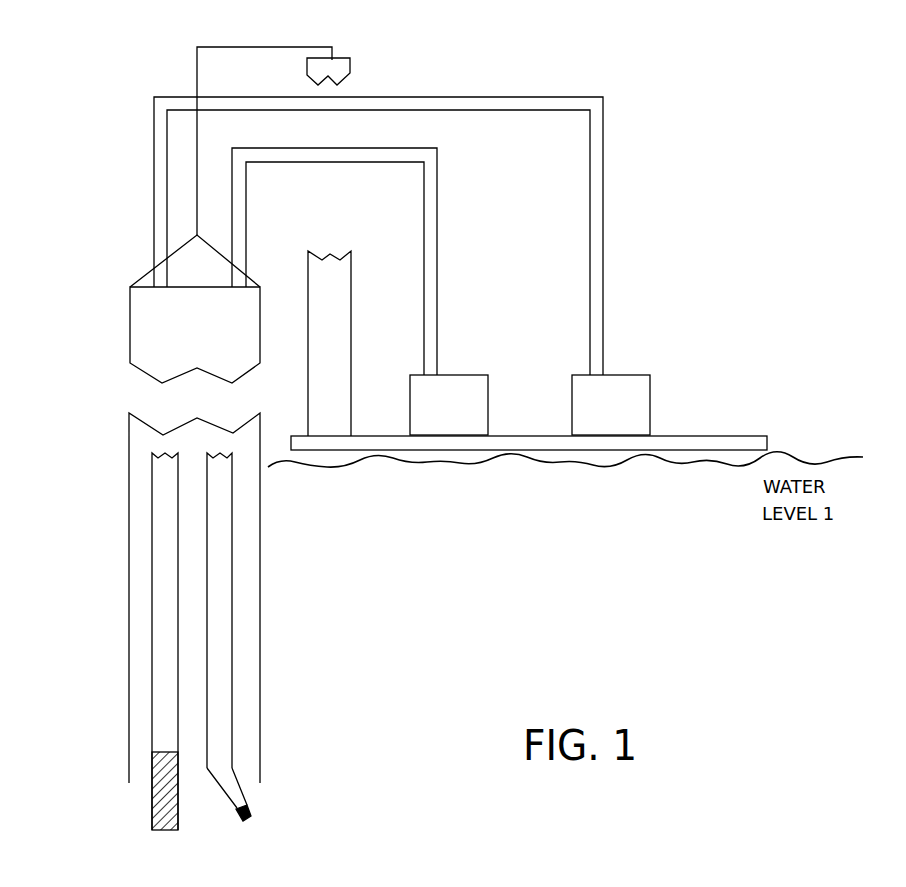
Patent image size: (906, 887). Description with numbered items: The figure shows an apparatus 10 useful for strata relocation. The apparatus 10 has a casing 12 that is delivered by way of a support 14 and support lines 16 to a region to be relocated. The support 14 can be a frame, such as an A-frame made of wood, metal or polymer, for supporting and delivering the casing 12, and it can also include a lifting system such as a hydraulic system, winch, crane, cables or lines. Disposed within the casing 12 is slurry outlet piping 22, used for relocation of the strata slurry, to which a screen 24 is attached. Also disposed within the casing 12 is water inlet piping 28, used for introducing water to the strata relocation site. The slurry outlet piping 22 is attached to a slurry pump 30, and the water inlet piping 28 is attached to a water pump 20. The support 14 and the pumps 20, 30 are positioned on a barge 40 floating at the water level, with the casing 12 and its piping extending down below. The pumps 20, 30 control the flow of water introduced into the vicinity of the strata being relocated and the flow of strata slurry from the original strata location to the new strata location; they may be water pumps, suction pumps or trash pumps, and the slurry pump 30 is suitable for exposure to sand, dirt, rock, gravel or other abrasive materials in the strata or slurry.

The apparatus 10 is at (72, 374).
The casing 12 is at (129, 576).
The support 14 is at (350, 60).
The support lines 16 is at (197, 62).
The water pump 20 is at (449, 405).
The slurry outlet piping 22 is at (603, 250).
The screen 24 is at (152, 810).
The water inlet piping 28 is at (437, 255).
The slurry pump 30 is at (611, 405).
The barge 40 is at (699, 434).